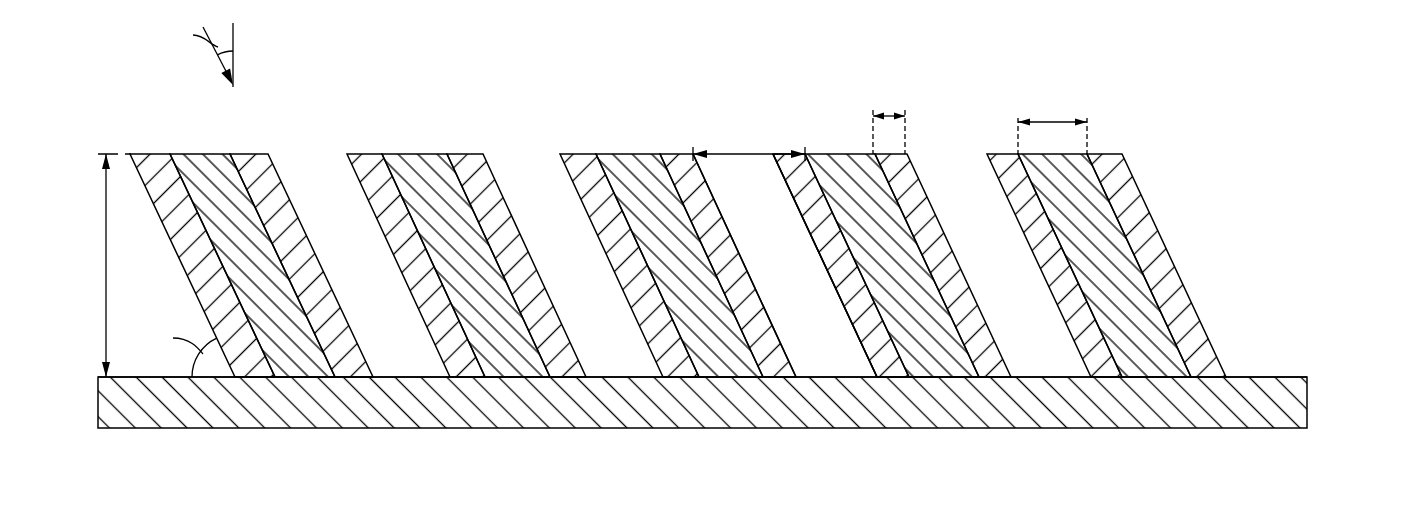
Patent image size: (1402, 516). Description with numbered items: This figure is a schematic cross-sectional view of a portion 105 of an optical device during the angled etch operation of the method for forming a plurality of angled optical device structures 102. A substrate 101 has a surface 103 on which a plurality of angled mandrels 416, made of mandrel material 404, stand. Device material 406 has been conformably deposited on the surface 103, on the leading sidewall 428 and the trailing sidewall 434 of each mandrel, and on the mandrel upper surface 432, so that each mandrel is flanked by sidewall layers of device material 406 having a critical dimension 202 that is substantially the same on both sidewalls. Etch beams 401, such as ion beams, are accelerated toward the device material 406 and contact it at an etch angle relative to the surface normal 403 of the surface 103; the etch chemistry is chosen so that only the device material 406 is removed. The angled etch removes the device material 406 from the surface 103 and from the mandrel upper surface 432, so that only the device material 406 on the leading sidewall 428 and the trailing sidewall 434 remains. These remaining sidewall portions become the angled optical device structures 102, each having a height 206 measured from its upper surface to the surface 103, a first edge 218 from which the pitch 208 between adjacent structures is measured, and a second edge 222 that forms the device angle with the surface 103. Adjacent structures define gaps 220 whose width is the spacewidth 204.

The substrate 101 is at (1308, 402).
The angled optical device structure 102 is at (1229, 303).
The surface of the substrate 103 is at (1262, 377).
The portion 105 is at (1216, 47).
The critical dimension 202 is at (890, 115).
The spacewidth 204 is at (1048, 117).
The height 206 is at (105, 240).
The pitch 208 is at (728, 153).
The first edge 218 is at (728, 223).
The gap 220 is at (742, 168).
The second edge 222 is at (827, 268).
The etch beam 401 is at (220, 62).
The surface normal 403 is at (235, 57).
The mandrel material 404 is at (1128, 288).
The device material 406 is at (1130, 173).
The angled mandrel 416 is at (1110, 219).
The leading sidewall 428 is at (263, 202).
The mandrel upper surface 432 is at (412, 153).
The trailing sidewall 434 is at (212, 250).